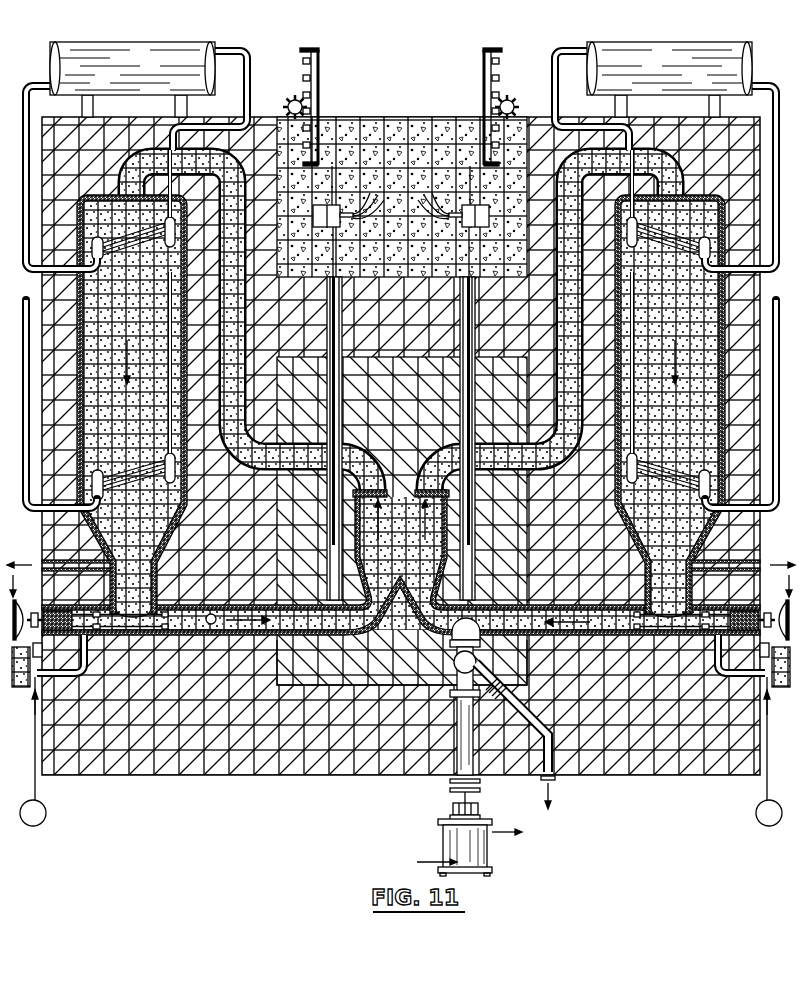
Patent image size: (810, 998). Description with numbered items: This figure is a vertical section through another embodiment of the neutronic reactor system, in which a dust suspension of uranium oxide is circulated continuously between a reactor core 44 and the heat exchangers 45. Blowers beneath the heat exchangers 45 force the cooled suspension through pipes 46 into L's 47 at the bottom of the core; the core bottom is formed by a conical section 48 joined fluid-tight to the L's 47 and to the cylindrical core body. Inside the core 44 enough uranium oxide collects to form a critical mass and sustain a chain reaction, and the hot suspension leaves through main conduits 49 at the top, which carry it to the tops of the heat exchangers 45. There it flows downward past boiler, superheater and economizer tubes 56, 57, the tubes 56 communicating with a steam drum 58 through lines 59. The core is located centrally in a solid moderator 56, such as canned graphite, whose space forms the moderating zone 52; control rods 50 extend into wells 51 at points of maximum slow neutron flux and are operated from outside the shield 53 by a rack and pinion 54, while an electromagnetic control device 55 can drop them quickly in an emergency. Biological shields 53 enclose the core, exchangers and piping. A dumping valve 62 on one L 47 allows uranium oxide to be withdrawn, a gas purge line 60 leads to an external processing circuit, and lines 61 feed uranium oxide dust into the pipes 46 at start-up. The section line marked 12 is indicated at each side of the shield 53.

The plunger valve 12 is at (401, 700).
The reactor core 44 is at (442, 558).
The heat exchangers 45 is at (77, 390).
The pipes 46 is at (167, 607).
The L's 47 is at (330, 637).
The conical section 48 is at (400, 600).
The main conduits 49 is at (150, 155).
The control rods 50 is at (333, 310).
The wells 51 is at (324, 333).
The moderating zone 52 is at (445, 382).
The shield 53 is at (115, 117).
The rack and pinion 54 is at (305, 62).
The electromagnetic control device 55 is at (313, 210).
The solid moderator 56 is at (140, 228).
The tubes 57 is at (145, 462).
The steam drum 58 is at (120, 45).
The lines 59 is at (35, 85).
The gas purge line 60 is at (100, 563).
The lines 61 is at (211, 626).
The dumping valve 62 is at (455, 738).